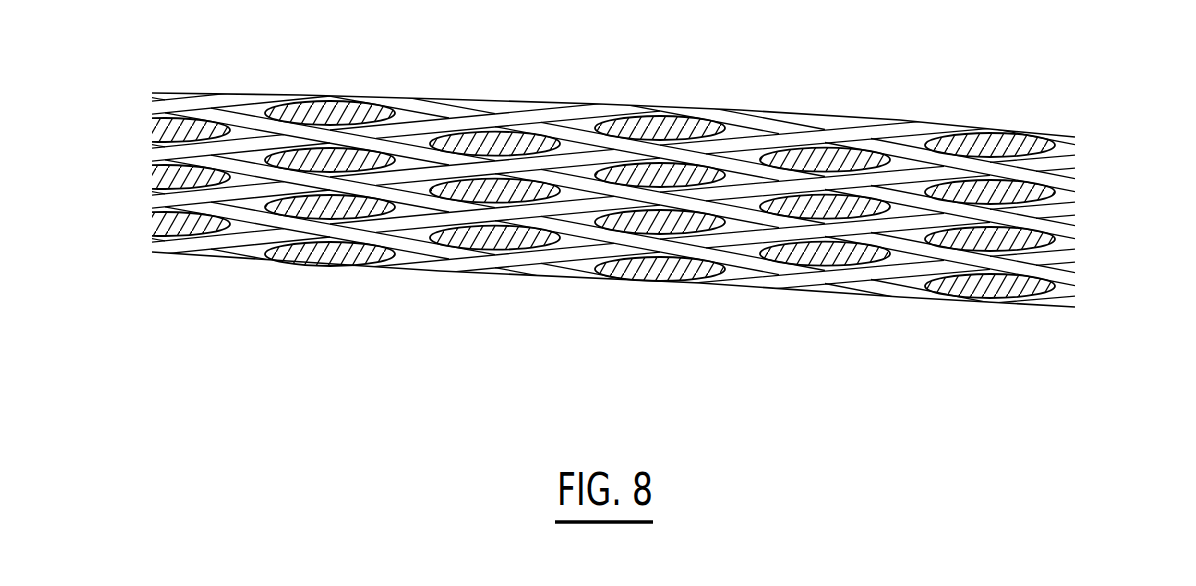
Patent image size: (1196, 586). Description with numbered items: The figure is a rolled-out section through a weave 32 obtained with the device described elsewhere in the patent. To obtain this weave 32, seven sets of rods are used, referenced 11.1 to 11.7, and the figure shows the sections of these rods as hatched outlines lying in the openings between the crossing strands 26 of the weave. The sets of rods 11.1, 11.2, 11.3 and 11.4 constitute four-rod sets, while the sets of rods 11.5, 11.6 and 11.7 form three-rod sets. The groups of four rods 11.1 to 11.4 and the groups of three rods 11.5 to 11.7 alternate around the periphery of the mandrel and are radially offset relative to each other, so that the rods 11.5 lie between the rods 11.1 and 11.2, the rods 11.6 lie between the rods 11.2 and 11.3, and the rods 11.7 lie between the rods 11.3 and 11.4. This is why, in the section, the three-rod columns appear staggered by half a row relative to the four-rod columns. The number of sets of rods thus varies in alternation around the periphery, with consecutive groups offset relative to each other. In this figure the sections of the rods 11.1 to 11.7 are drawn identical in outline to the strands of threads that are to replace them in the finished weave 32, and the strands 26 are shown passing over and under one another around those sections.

The set of rods 11.1 is at (312, 108).
The set of rods 11.2 is at (343, 160).
The set of rods 11.3 is at (283, 207).
The set of rods 11.4 is at (308, 255).
The set of rods 11.5 is at (548, 147).
The set of rods 11.6 is at (518, 190).
The set of rods 11.7 is at (478, 243).
The braid strand 26 is at (460, 115).
The weave 32 is at (414, 296).